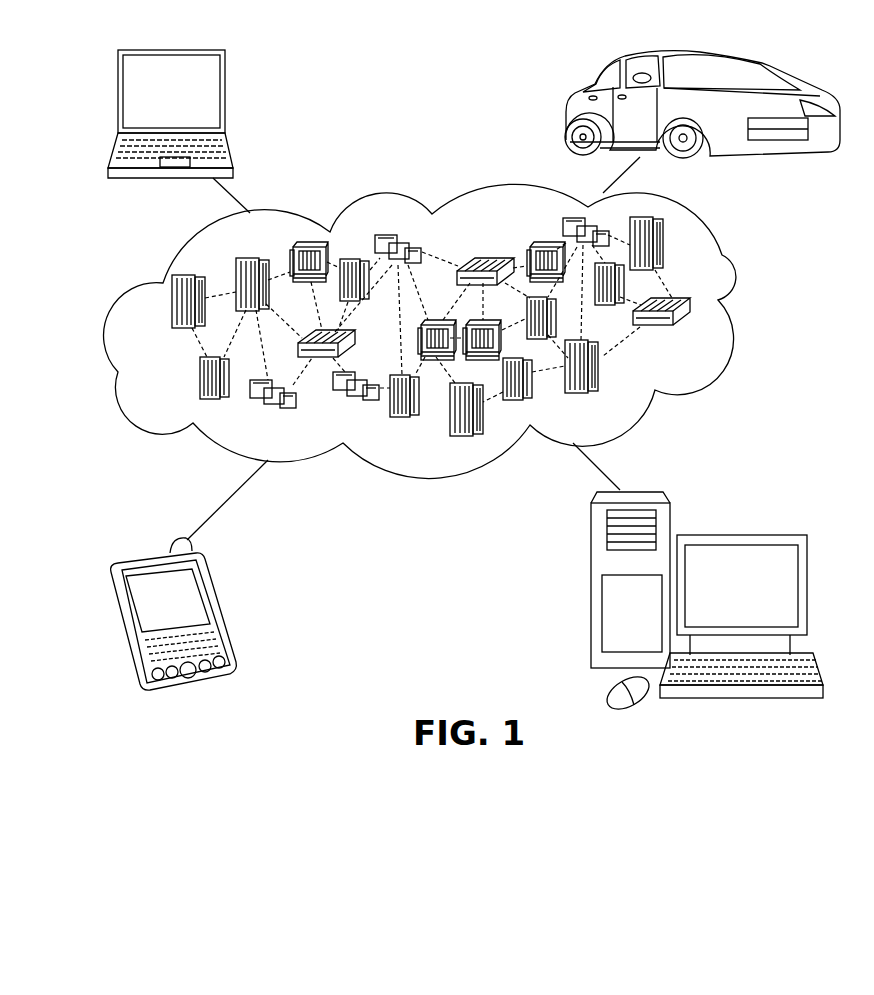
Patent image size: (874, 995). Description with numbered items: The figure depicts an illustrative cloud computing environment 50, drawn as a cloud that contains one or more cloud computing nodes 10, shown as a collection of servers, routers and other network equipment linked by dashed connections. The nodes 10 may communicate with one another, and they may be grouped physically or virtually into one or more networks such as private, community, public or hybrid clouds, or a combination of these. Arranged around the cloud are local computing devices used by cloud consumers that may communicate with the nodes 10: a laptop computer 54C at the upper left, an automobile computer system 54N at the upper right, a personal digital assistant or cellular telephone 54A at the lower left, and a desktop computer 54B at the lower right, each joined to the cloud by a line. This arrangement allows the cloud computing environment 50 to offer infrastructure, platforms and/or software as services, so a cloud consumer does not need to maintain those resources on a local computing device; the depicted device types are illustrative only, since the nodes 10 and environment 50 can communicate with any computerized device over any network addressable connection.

The cloud computing nodes 10 is at (706, 338).
The cloud computing environment 50 is at (740, 309).
The personal digital assistant or cellular telephone 54A is at (222, 607).
The desktop computer 54B is at (746, 533).
The laptop computer 54C is at (228, 100).
The automobile computer system 54N is at (567, 108).